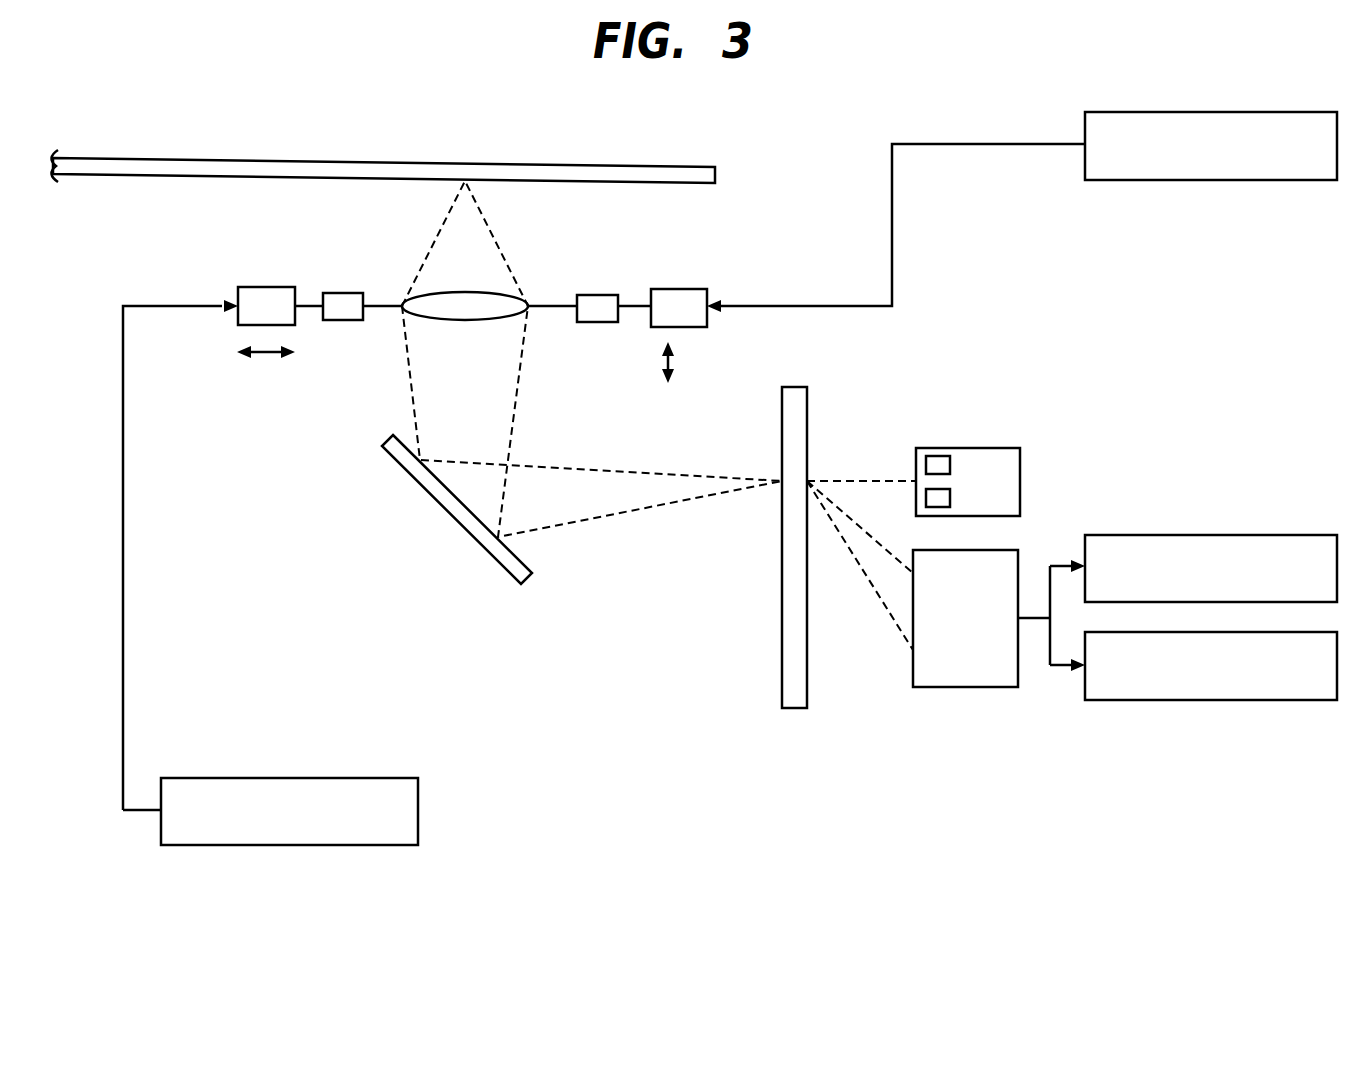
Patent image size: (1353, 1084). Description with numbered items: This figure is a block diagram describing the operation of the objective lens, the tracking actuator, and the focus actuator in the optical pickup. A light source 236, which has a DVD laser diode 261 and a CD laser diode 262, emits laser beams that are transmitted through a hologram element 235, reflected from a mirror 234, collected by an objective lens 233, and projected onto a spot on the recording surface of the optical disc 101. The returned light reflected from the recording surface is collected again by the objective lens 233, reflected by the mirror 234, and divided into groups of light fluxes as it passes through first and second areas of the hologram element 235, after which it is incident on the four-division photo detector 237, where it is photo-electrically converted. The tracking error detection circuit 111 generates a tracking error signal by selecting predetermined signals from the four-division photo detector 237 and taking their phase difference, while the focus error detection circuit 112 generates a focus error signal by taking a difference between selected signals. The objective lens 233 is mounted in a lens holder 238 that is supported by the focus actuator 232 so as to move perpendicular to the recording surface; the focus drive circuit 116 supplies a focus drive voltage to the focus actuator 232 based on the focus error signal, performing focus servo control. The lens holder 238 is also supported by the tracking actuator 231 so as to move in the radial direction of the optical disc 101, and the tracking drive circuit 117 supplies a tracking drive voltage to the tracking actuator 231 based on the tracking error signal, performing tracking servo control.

The optical disc 101 is at (522, 163).
The tracking actuator 231 is at (267, 287).
The lens holder 238 is at (342, 293).
The objective lens 233 is at (515, 295).
The focus actuator 232 is at (682, 289).
The mirror 234 is at (430, 497).
The hologram element 235 is at (793, 387).
The light source 236 is at (955, 448).
The DVD laser diode 261 is at (950, 466).
The CD laser diode 262 is at (950, 498).
The four-division photo detector 237 is at (960, 688).
The focus drive circuit 116 is at (1213, 180).
The tracking error detection circuit 111 is at (1215, 535).
The focus error detection circuit 112 is at (1213, 700).
The tracking drive circuit 117 is at (268, 778).